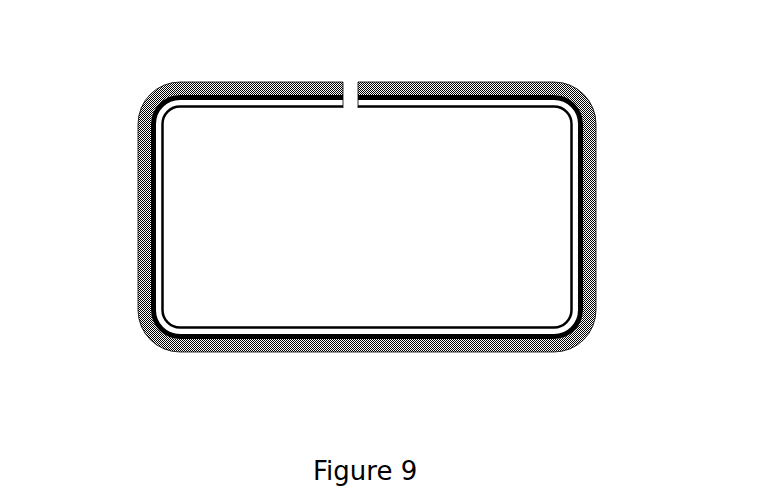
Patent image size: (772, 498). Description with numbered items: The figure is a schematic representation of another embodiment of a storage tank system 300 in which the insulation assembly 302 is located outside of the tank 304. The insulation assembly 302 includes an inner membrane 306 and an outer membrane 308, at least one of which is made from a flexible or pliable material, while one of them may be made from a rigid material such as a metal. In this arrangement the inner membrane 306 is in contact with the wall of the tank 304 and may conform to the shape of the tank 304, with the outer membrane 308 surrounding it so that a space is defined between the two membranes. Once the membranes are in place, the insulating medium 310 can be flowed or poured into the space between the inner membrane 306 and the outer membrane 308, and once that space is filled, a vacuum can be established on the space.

The storage tank system 300 is at (370, 184).
The insulation assembly 302 is at (306, 184).
The tank 304 is at (475, 108).
The inner membrane 306 is at (170, 312).
The outer membrane 308 is at (139, 232).
The insulating medium 310 is at (258, 92).